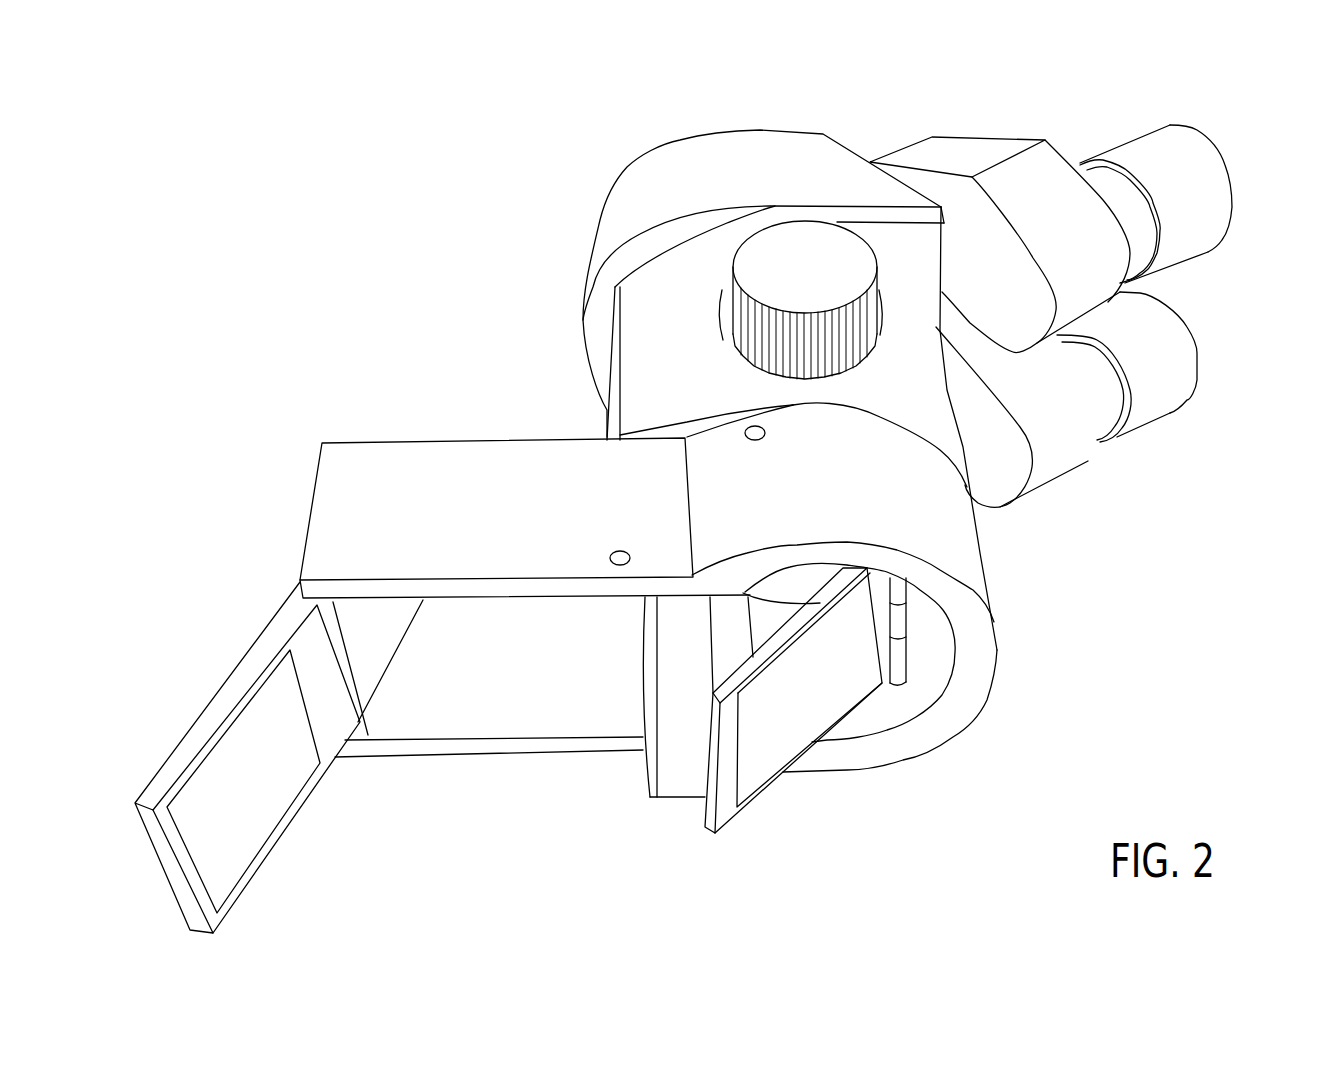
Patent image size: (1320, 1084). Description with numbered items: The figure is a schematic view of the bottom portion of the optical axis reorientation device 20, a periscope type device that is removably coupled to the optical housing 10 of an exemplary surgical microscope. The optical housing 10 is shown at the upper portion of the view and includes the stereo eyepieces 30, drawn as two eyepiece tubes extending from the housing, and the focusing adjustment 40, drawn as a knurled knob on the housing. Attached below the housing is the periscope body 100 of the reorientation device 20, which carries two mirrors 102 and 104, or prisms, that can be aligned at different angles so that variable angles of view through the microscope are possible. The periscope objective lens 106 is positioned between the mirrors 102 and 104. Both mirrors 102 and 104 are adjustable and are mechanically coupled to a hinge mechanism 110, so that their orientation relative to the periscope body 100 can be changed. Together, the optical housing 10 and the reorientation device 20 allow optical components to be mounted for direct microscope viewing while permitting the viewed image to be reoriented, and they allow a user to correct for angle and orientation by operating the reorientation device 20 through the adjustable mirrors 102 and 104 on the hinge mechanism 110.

The optical housing 10 is at (800, 163).
The optical axis reorientation device 20 is at (407, 462).
The stereo eyepieces 30 is at (970, 160).
The focusing adjustment 40 is at (733, 290).
The periscope body 100 is at (307, 523).
The mirror 102 is at (753, 777).
The mirror 104 is at (212, 694).
The periscope objective lens 106 is at (632, 768).
The hinge mechanism 110 is at (910, 662).